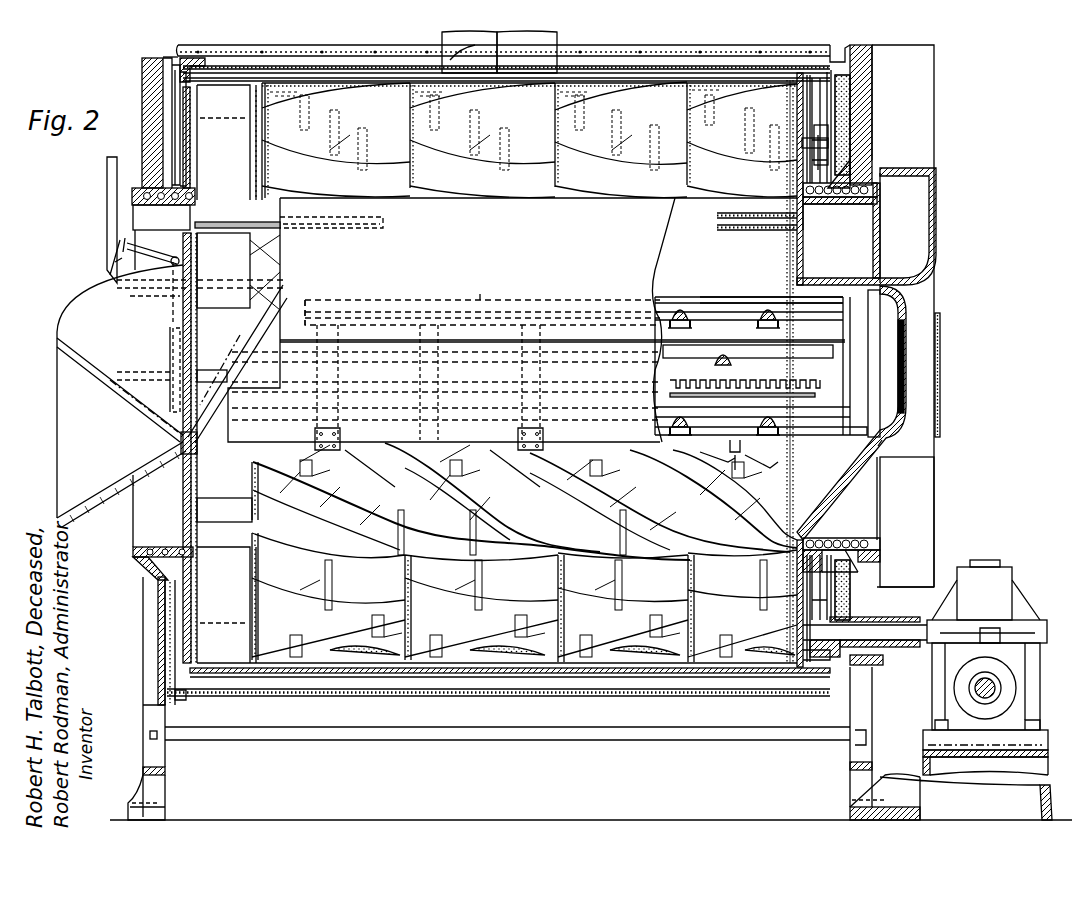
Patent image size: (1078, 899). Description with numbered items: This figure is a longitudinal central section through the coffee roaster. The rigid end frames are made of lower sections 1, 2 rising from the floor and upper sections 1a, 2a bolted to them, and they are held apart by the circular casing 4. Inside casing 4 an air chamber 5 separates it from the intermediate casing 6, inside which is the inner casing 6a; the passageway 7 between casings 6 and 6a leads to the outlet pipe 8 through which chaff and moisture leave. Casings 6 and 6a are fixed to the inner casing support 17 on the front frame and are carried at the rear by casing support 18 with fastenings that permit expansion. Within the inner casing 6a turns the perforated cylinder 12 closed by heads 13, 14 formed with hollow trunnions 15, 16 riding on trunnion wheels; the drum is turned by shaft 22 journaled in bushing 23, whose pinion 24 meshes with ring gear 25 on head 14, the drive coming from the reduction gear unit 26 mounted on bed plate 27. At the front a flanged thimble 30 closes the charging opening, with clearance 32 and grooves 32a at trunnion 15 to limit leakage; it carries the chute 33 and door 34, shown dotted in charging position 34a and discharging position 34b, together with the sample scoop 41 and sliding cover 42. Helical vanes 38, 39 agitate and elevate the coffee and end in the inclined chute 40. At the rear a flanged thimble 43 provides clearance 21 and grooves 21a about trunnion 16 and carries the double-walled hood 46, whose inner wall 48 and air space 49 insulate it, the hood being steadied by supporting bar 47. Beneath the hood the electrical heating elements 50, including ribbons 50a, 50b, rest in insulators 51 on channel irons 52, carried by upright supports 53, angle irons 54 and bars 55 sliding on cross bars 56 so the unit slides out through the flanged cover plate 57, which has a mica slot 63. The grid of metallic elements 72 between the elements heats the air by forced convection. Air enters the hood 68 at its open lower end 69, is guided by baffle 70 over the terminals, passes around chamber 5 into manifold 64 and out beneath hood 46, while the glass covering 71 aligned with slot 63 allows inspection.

The lower end frame section 1 is at (143, 712).
The upper end frame section 1a is at (142, 78).
The lower end frame section 2 is at (872, 718).
The upper end frame section 2a is at (872, 110).
The circular casing 4 is at (838, 48).
The air chamber 5 is at (408, 712).
The intermediate casing 6 is at (175, 57).
The inner casing 6a is at (690, 78).
The passageway 7 is at (713, 81).
The outlet pipe 8 is at (527, 52).
The perforated cylinder 12 is at (412, 95).
The drum head 13 is at (197, 142).
The drum head 14 is at (797, 130).
The hollow trunnion 15 is at (158, 585).
The hollow trunnion 16 is at (833, 580).
The inner casing support 17 is at (182, 702).
The casing support 18 is at (816, 658).
The clearance 21 is at (822, 205).
The circumferential grooves 21a is at (845, 198).
The shaft 22 is at (922, 650).
The bushing 23 is at (912, 617).
The pinion 24 is at (797, 662).
The ring gear 25 is at (826, 125).
The motor 26 is at (1005, 570).
The bed plate 27 is at (1040, 742).
The flanged thimble 30 is at (133, 530).
The clearance 32 is at (171, 550).
The circumferential grooves 32a is at (153, 547).
The chute 33 is at (100, 492).
The door 34 is at (176, 303).
The door charging position 34a is at (100, 378).
The door discharging position 34b is at (240, 346).
The helical vane 38 is at (524, 365).
The helical vane 39 is at (524, 359).
The inclined chute 40 is at (220, 503).
The sample scoop 41 is at (207, 370).
The sliding cover 42 is at (172, 350).
The flanged thimble 43 is at (868, 540).
The hood or baffle 46 is at (745, 215).
The horizontal supporting bar 47 is at (230, 222).
The inner baffle wall 48 is at (736, 228).
The air space 49 is at (766, 232).
The electrical heating elements 50 is at (470, 300).
The heating element 50a is at (735, 297).
The heating element 50b is at (775, 328).
The insulators 51 is at (768, 320).
The channel irons 52 is at (806, 456).
The upright supports 53 is at (345, 366).
The angle irons 54 is at (652, 320).
The bars 55 is at (846, 425).
The cross bars 56 is at (742, 452).
The flanged cover plate 57 is at (896, 447).
The vertical slot 63 is at (905, 345).
The manifold 64 is at (866, 226).
The hood 68 is at (935, 143).
The lower end of hood 69 is at (883, 587).
The baffle 70 is at (901, 460).
The glass covering 71 is at (941, 352).
The metallic grid elements 72 is at (670, 383).